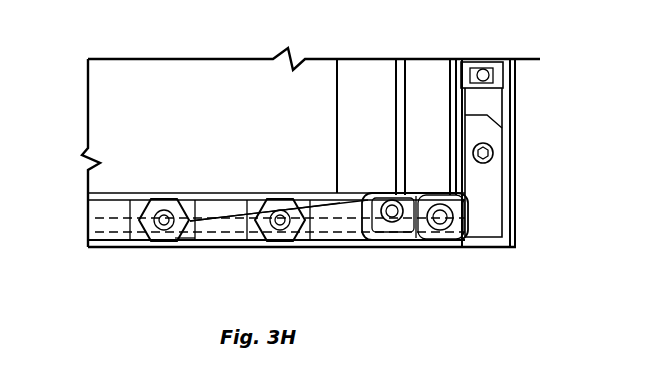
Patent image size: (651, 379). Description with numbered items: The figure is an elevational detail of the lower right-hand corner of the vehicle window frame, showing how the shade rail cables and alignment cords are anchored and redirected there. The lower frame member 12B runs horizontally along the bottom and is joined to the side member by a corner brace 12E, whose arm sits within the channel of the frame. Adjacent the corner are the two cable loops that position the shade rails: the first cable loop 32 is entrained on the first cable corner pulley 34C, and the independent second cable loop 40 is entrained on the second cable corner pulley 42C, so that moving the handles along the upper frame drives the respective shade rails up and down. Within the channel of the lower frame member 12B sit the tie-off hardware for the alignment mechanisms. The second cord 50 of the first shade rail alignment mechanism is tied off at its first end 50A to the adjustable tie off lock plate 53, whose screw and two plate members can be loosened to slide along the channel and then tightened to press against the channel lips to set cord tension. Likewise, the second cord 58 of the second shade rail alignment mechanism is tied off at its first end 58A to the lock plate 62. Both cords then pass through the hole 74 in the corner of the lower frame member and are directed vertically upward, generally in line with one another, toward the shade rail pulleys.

The lower frame member 12B is at (197, 248).
The corner brace 12E is at (490, 190).
The first cable loop 32 is at (405, 122).
The first cable corner pulley 34C is at (390, 200).
The second cable loop 40 is at (450, 145).
The second cable corner pulley 42C is at (466, 228).
The second cord 50 is at (395, 72).
The first end of second cord 50A is at (296, 206).
The adjustable tie off lock plate 53 is at (276, 246).
The second cord 58 is at (226, 214).
The first end of second cord 58A is at (186, 236).
The lock plate 62 is at (140, 210).
The hole 74 is at (427, 196).